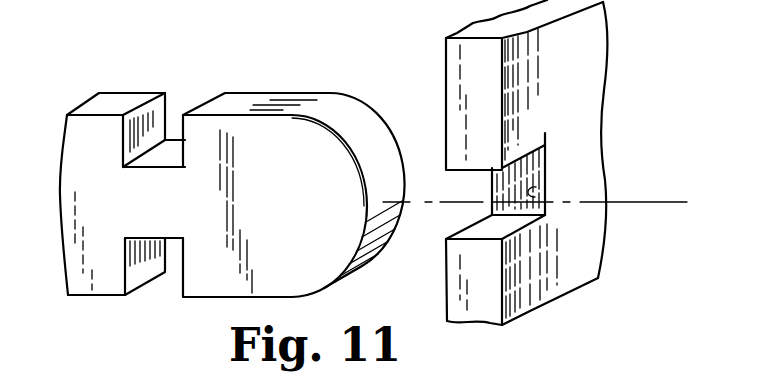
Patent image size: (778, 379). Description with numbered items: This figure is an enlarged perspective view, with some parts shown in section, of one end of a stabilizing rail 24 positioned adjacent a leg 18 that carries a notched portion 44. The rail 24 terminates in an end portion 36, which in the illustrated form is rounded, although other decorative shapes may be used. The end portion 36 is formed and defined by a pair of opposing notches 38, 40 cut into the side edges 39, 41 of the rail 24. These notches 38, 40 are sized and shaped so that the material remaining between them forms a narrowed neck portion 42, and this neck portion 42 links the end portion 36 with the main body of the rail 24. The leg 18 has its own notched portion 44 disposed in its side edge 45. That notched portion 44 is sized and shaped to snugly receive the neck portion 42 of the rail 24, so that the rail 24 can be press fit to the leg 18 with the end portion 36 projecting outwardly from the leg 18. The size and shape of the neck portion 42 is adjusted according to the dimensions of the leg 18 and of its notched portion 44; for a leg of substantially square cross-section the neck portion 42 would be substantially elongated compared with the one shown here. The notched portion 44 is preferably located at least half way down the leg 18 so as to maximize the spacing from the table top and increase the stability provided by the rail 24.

The leg member 18 is at (580, 58).
The stabilizing rail 24 is at (124, 80).
The end portion 36 is at (283, 138).
The notch 38 is at (173, 157).
The side edge 39 is at (103, 100).
The notch 40 is at (163, 286).
The side edge 41 is at (102, 297).
The neck portion 42 is at (157, 202).
The notched portion 44 is at (545, 197).
The side edge 45 is at (470, 60).